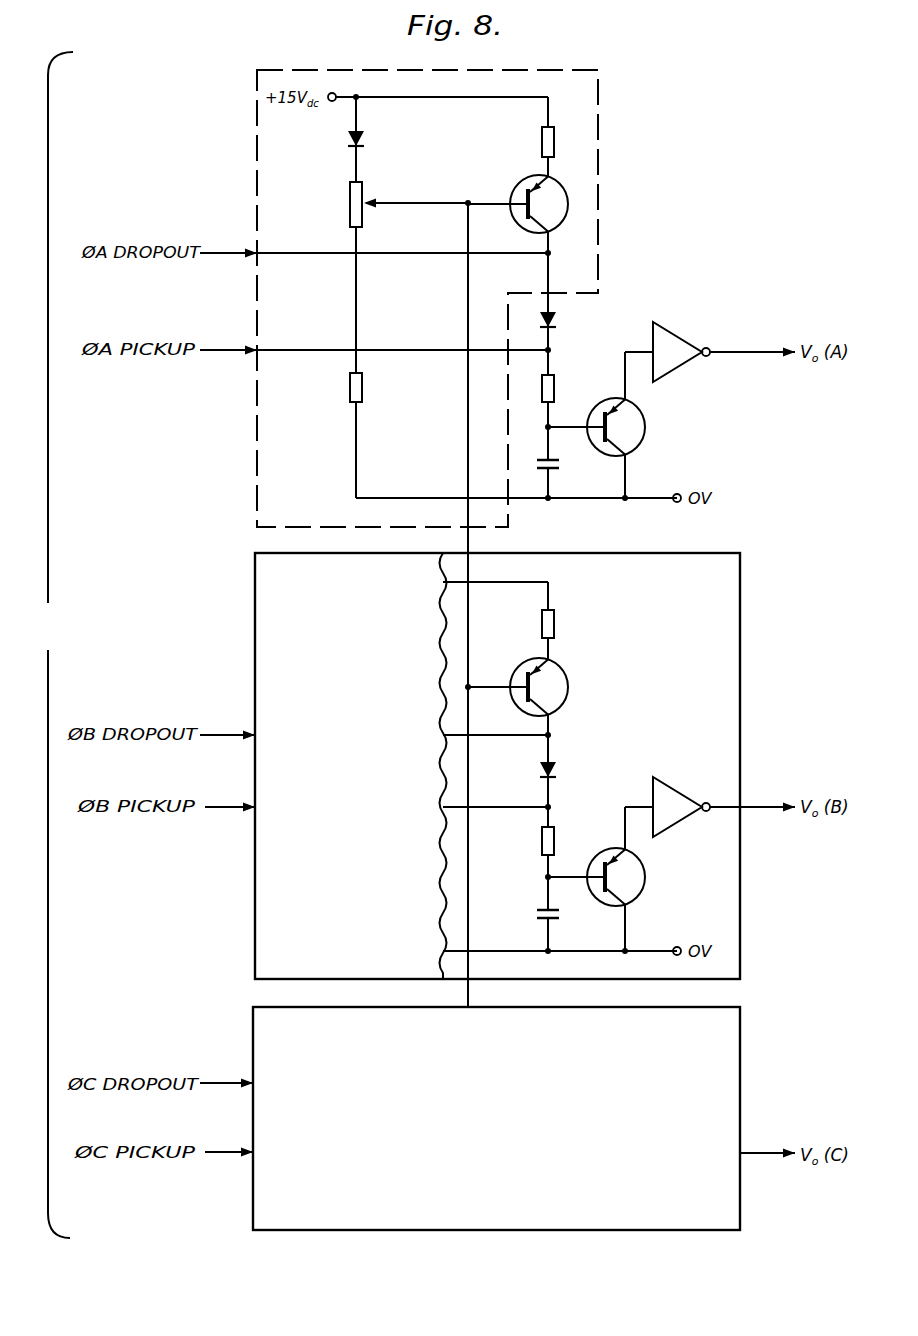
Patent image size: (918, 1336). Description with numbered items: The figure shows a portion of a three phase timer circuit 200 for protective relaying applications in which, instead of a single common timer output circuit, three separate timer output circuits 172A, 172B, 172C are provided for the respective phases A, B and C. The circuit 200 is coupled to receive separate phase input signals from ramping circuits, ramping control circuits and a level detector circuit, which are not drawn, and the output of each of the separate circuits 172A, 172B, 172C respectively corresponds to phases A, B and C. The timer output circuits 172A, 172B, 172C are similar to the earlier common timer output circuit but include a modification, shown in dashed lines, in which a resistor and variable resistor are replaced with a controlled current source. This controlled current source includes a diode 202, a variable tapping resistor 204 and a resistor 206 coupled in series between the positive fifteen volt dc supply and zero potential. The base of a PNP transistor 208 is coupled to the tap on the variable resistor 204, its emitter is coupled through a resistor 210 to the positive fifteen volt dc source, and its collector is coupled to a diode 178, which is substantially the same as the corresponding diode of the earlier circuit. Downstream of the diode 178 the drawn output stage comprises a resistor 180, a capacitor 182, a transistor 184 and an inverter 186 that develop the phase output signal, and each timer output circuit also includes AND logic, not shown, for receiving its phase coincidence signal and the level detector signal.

The three phase timer circuit 200 is at (67, 637).
The timer output circuit 172A is at (437, 308).
The timer output circuit 172B is at (410, 778).
The timer output circuit 172C is at (517, 1123).
The diode 202 is at (348, 141).
The variable tapping resistor 204 is at (346, 210).
The resistor 206 is at (348, 395).
The PNP transistor 208 is at (529, 184).
The resistor 210 is at (555, 140).
The diode 178 is at (557, 322).
The resistor 180 is at (555, 388).
The capacitor 182 is at (560, 464).
The transistor 184 is at (645, 427).
The inverter 186 is at (677, 336).